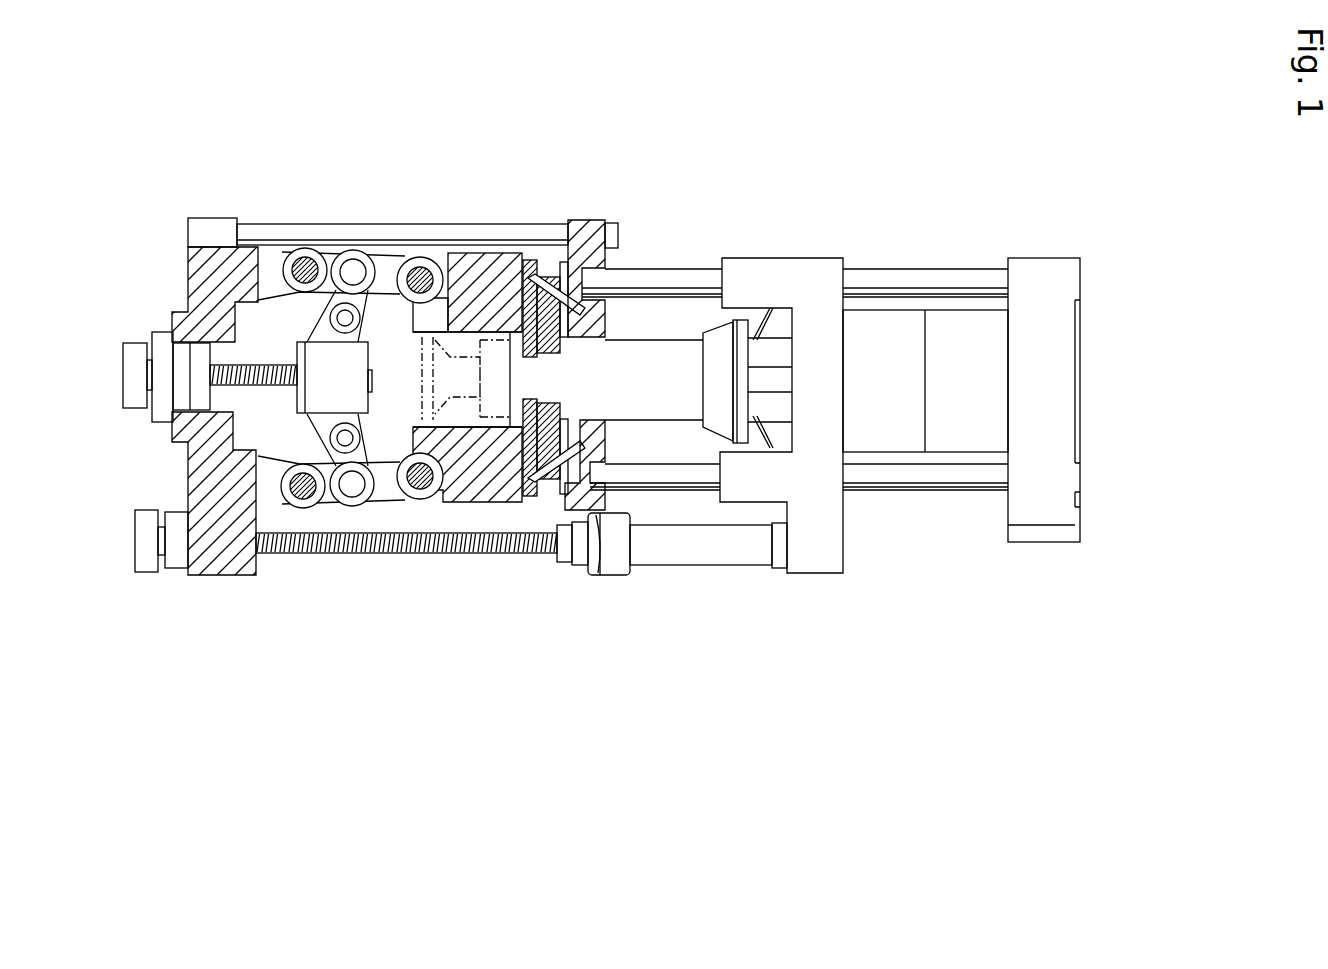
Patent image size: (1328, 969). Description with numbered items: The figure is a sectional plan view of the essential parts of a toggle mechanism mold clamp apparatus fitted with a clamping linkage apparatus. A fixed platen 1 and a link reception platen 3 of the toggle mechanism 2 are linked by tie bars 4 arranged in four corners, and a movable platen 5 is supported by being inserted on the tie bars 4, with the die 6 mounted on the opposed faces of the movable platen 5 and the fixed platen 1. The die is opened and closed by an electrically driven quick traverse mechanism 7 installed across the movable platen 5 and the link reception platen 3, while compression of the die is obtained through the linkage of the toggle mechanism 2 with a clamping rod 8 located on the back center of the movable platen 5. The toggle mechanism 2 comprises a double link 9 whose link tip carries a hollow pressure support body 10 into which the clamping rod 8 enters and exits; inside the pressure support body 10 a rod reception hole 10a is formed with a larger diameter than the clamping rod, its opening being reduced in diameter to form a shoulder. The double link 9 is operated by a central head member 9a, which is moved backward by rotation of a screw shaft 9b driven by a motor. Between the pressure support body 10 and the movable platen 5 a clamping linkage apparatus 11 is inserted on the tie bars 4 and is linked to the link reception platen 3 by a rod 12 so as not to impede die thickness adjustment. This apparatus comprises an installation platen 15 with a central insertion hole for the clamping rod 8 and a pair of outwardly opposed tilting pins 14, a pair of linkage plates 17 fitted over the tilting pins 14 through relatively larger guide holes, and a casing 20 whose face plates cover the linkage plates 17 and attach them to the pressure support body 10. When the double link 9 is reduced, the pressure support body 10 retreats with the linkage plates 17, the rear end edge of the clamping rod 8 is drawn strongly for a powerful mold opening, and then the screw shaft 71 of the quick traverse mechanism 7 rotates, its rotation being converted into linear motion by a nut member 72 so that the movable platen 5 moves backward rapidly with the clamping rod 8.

The fixed platen 1 is at (1045, 288).
The toggle mechanism 2 is at (408, 240).
The link reception platen 3 is at (212, 262).
The tie bar 4 is at (698, 269).
The movable platen 5 is at (818, 327).
The die 6 is at (958, 327).
The electrically driven quick traverse mechanism 7 is at (701, 573).
The clamping rod 8 is at (647, 394).
The double link 9 is at (385, 257).
The central head member 9a is at (325, 372).
The screw shaft 9b is at (247, 393).
The pressure support body 10 is at (480, 275).
The rod reception hole 10a is at (465, 415).
The clamping linkage apparatus 11 is at (621, 213).
The rod 12 is at (272, 240).
The tilting pin 14 is at (549, 262).
The installation platen 15 is at (600, 517).
The linkage plate 17 is at (582, 316).
The casing 20 is at (528, 257).
The screw shaft 71 is at (313, 547).
The nut member 72 is at (578, 555).